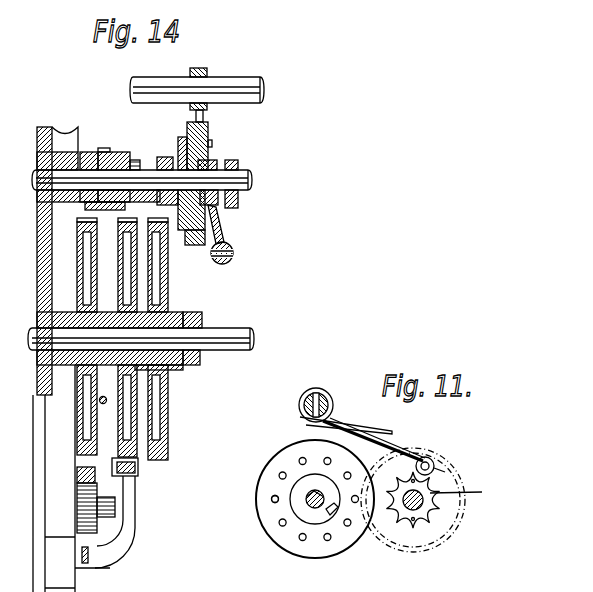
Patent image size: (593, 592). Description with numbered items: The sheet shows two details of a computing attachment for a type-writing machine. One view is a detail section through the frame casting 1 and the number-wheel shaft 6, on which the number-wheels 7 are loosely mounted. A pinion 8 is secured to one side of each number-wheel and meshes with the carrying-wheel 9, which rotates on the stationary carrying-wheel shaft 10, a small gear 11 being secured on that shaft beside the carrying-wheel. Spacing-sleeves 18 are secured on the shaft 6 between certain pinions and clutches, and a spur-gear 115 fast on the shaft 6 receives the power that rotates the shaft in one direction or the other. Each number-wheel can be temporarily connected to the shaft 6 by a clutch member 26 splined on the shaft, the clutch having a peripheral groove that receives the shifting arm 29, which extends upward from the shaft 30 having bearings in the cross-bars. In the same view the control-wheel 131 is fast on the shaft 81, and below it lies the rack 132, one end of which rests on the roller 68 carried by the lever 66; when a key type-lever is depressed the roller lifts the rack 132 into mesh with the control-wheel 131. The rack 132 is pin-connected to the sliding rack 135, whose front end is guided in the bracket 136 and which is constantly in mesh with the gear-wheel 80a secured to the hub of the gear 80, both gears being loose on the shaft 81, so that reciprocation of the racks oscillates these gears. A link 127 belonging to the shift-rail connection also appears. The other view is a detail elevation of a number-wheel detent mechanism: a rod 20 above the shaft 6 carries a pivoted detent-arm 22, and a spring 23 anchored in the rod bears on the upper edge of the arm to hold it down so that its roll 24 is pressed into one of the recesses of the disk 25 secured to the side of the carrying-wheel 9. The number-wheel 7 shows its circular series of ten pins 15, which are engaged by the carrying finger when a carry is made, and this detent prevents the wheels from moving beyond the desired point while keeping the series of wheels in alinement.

In FIG. 14, the casting or bracket 1 is at (98, 359).
In FIG. 14, the number-wheel shaft 6 is at (248, 178).
In FIG. 14, the number-wheel 7 is at (190, 127).
In FIG. 11, the number-wheel 7 is at (272, 465).
In FIG. 14, the pinion 8 is at (178, 142).
In FIG. 11, the carrying-wheel 9 is at (413, 508).
In FIG. 11, the carrying-wheel shaft 10 is at (425, 508).
In FIG. 14, the small gear 11 is at (90, 152).
In FIG. 14, the pin 15 is at (212, 143).
In FIG. 11, the pin 15 is at (282, 522).
In FIG. 14, the spacing-sleeve 18 is at (240, 201).
In FIG. 14, the rod 20 is at (158, 86).
In FIG. 11, the rod 20 is at (323, 394).
In FIG. 14, the detent-arm 22 is at (203, 117).
In FIG. 11, the detent-arm 22 is at (390, 448).
In FIG. 11, the spring 23 is at (356, 427).
In FIG. 11, the roll 24 is at (438, 468).
In FIG. 11, the disk 25 is at (468, 493).
In FIG. 11, the clutch member 26 is at (306, 490).
In FIG. 14, the shifting arm 29 is at (229, 224).
In FIG. 14, the shaft 30 is at (233, 260).
In FIG. 14, the lever 66 is at (115, 507).
In FIG. 14, the roller 68 is at (80, 512).
In FIG. 14, the gear 80 is at (154, 337).
In FIG. 14, the gear-wheel 80a is at (130, 283).
In FIG. 14, the shaft 81 is at (141, 338).
In FIG. 14, the spur-gear 115 is at (110, 156).
In FIG. 14, the link 127 is at (99, 401).
In FIG. 14, the control-wheel 131 is at (83, 280).
In FIG. 14, the rack 132 is at (77, 473).
In FIG. 14, the sliding rack 135 is at (138, 470).
In FIG. 14, the bracket 136 is at (136, 480).